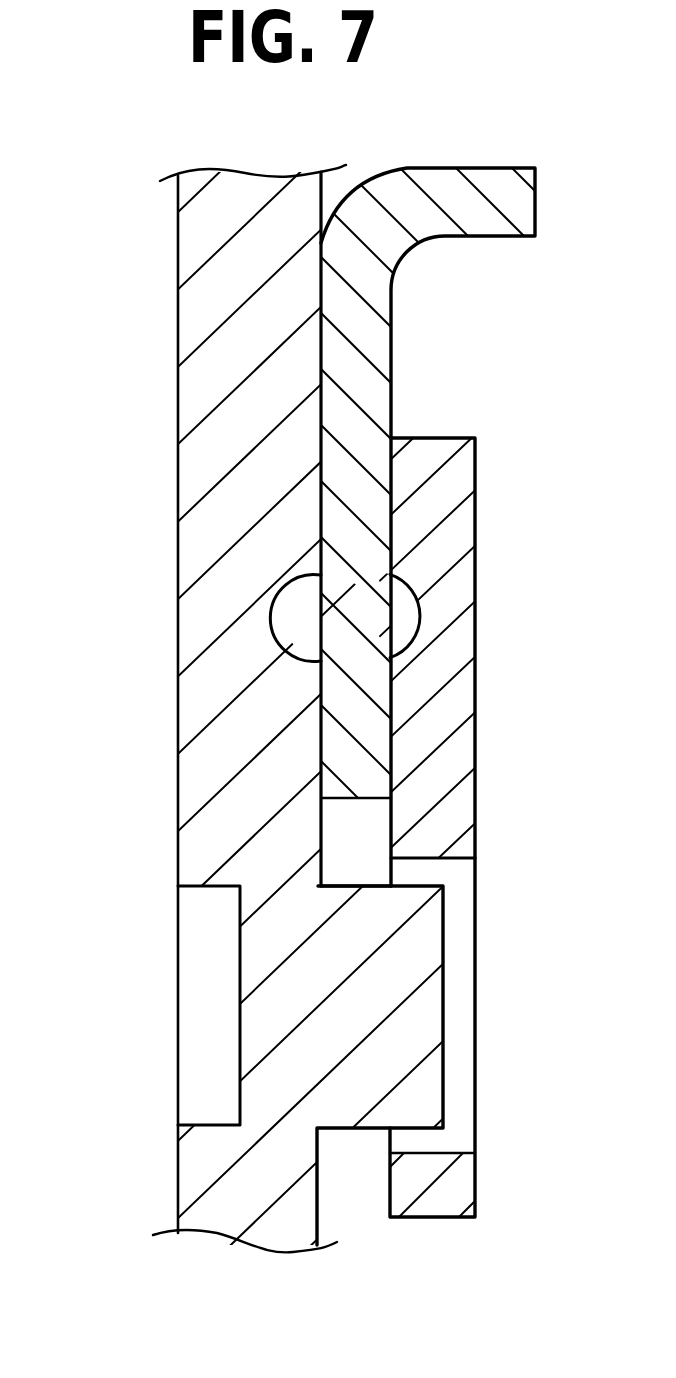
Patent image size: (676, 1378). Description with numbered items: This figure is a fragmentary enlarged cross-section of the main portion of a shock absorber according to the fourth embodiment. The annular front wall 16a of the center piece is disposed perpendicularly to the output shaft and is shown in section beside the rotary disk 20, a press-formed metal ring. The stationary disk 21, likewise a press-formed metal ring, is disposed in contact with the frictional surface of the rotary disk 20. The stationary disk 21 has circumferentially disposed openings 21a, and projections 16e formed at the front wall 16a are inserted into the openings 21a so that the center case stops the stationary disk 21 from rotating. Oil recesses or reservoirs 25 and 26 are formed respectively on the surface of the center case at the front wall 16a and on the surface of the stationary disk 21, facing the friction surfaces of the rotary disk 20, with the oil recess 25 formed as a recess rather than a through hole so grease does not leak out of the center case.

The front wall 16a is at (197, 252).
The projections 16e is at (425, 997).
The rotary disk 20 is at (330, 413).
The stationary disk 21 is at (455, 678).
The openings 21a is at (450, 872).
The oil recess 25 is at (297, 621).
The oil reservoir 26 is at (407, 618).